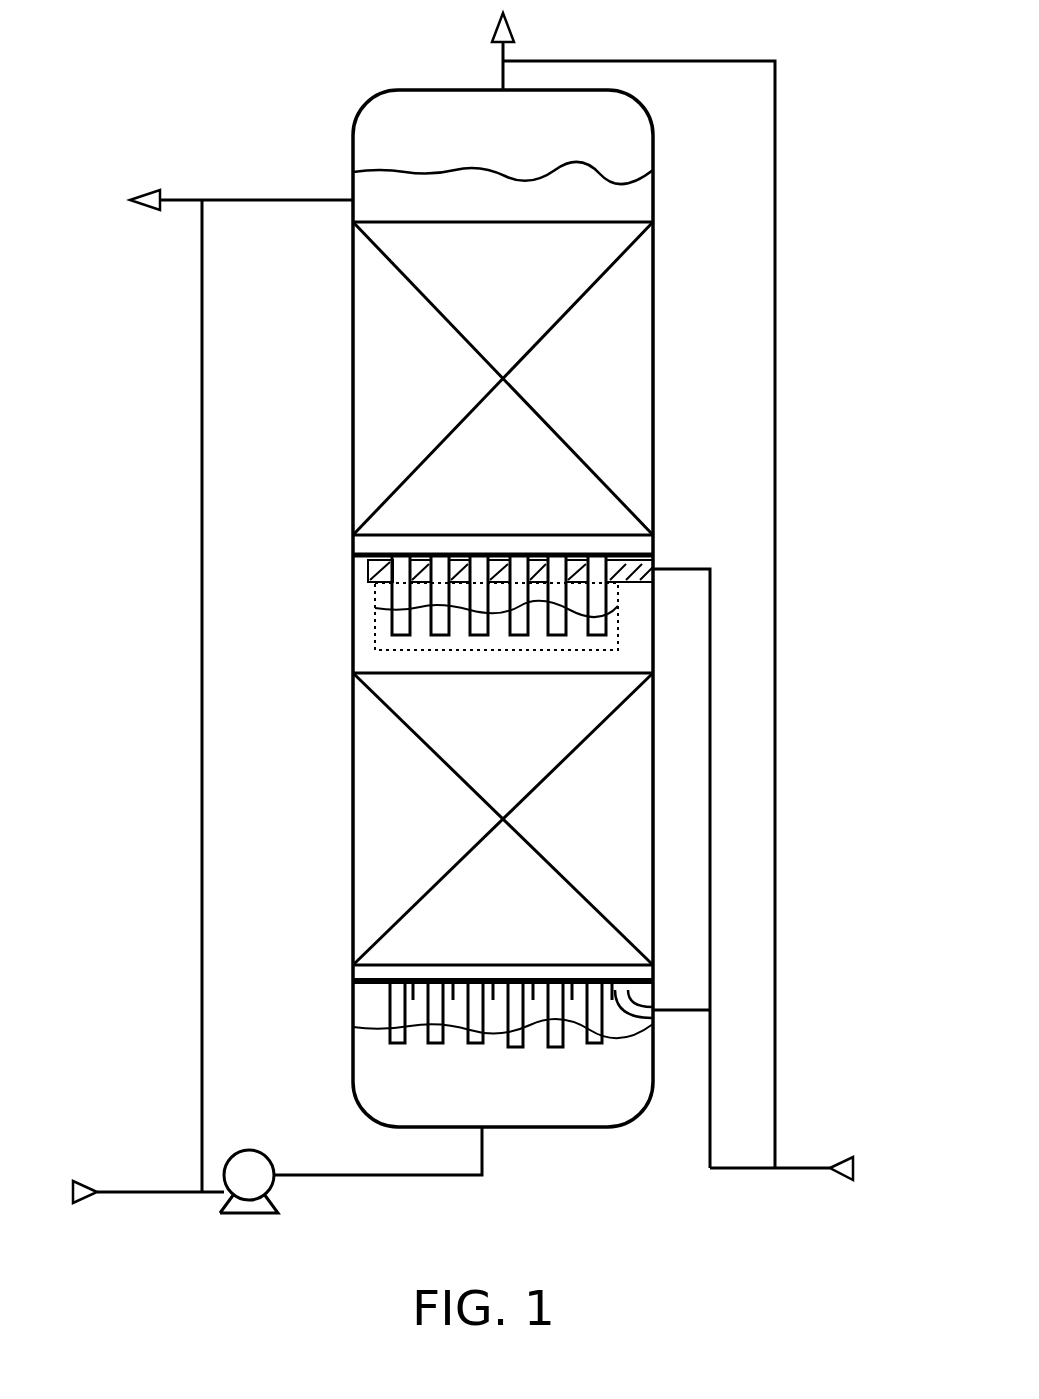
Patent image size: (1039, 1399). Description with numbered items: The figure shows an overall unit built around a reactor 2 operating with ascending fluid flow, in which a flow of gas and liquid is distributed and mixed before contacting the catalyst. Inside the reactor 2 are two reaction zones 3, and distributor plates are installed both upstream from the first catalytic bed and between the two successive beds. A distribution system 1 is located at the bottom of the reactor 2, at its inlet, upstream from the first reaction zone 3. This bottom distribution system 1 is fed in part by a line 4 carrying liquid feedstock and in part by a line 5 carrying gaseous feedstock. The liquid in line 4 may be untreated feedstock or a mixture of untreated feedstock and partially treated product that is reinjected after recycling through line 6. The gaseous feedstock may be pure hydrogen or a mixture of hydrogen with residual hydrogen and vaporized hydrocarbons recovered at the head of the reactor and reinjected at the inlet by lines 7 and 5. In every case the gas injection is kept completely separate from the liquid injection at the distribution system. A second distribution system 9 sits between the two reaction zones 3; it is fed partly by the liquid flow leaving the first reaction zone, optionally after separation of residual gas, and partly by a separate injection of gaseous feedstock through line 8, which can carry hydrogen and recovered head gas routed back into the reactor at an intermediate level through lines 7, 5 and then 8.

The distribution system 1 is at (355, 999).
The reactor 2 is at (355, 1097).
The reaction zones 3 is at (387, 442).
The line 4 is at (428, 1178).
The line 5 is at (710, 1133).
The line 6 is at (202, 963).
The line 7 is at (777, 1036).
The line 8 is at (712, 857).
The distribution system 9 is at (368, 561).